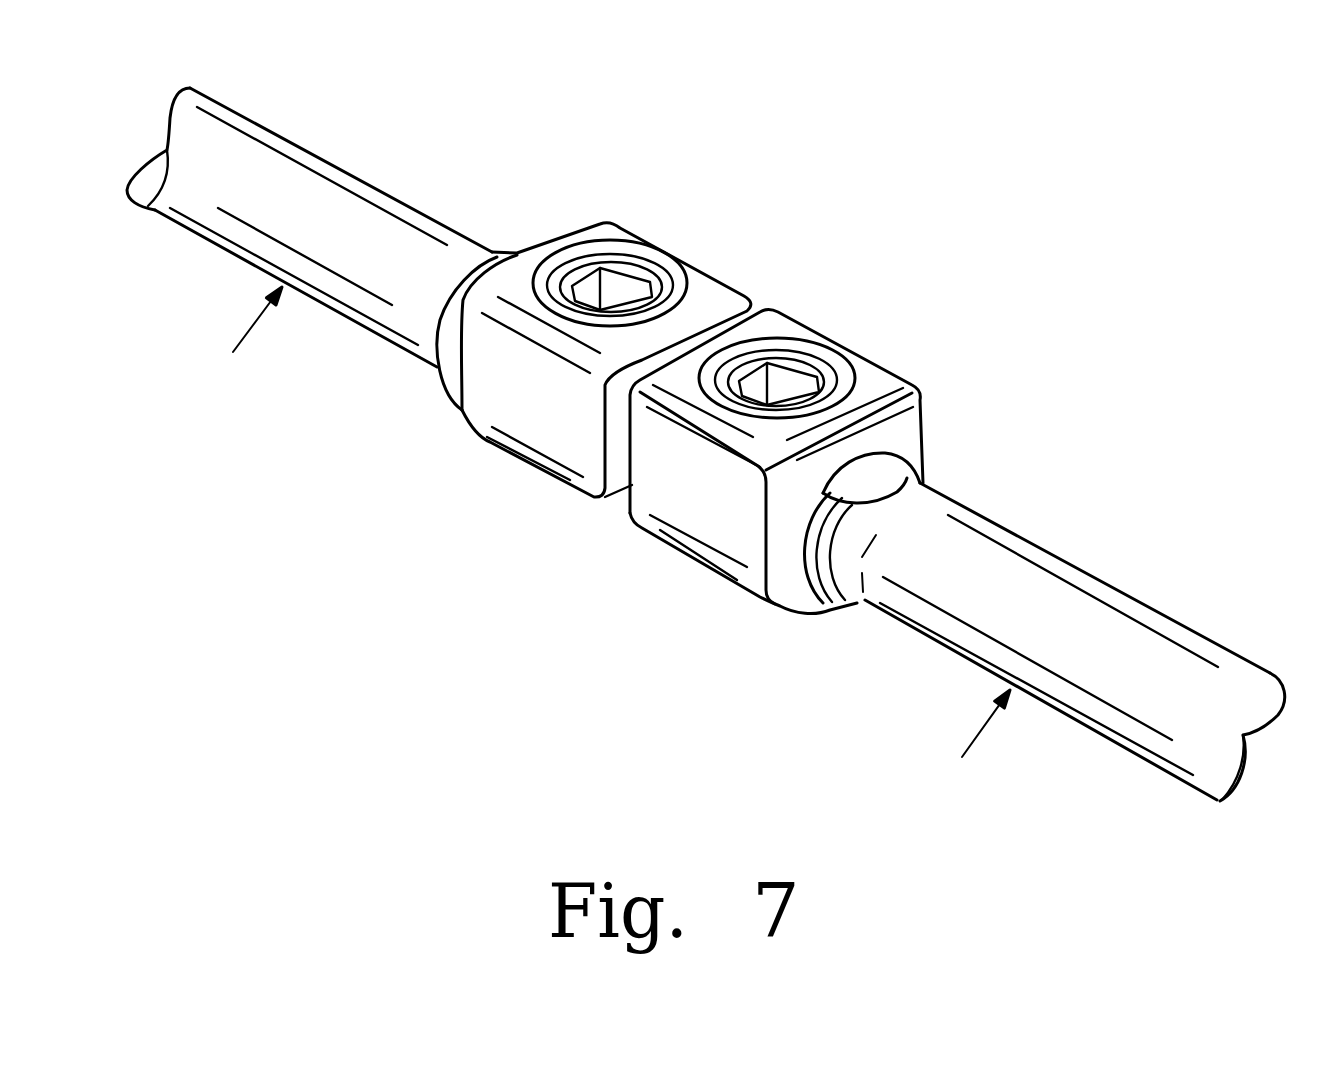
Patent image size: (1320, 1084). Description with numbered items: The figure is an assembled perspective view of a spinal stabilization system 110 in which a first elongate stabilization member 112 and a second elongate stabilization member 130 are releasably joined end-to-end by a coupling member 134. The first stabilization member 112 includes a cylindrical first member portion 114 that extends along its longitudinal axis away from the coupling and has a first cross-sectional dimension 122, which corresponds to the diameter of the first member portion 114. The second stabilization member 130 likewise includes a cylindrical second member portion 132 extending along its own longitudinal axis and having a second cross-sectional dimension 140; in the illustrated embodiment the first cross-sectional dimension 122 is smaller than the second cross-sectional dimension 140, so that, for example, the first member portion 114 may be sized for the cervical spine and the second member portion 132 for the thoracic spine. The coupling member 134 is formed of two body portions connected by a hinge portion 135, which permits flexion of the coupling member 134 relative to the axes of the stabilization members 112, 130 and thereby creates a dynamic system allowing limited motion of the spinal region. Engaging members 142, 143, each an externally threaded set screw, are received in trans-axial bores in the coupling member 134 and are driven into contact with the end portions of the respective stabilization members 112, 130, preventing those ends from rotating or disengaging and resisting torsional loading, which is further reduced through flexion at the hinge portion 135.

The spinal stabilization system 110 is at (680, 432).
The first elongate stabilization member 112 is at (350, 323).
The first member portion 114 is at (192, 233).
The first cross-sectional dimension 122 is at (309, 261).
The second elongate stabilization member 130 is at (886, 641).
The second member portion 132 is at (1085, 730).
The coupling member 134 is at (600, 381).
The hinge portion 135 is at (776, 419).
The second cross-sectional dimension 140 is at (1045, 633).
The engaging member 142 is at (623, 283).
The engaging member 143 is at (797, 380).